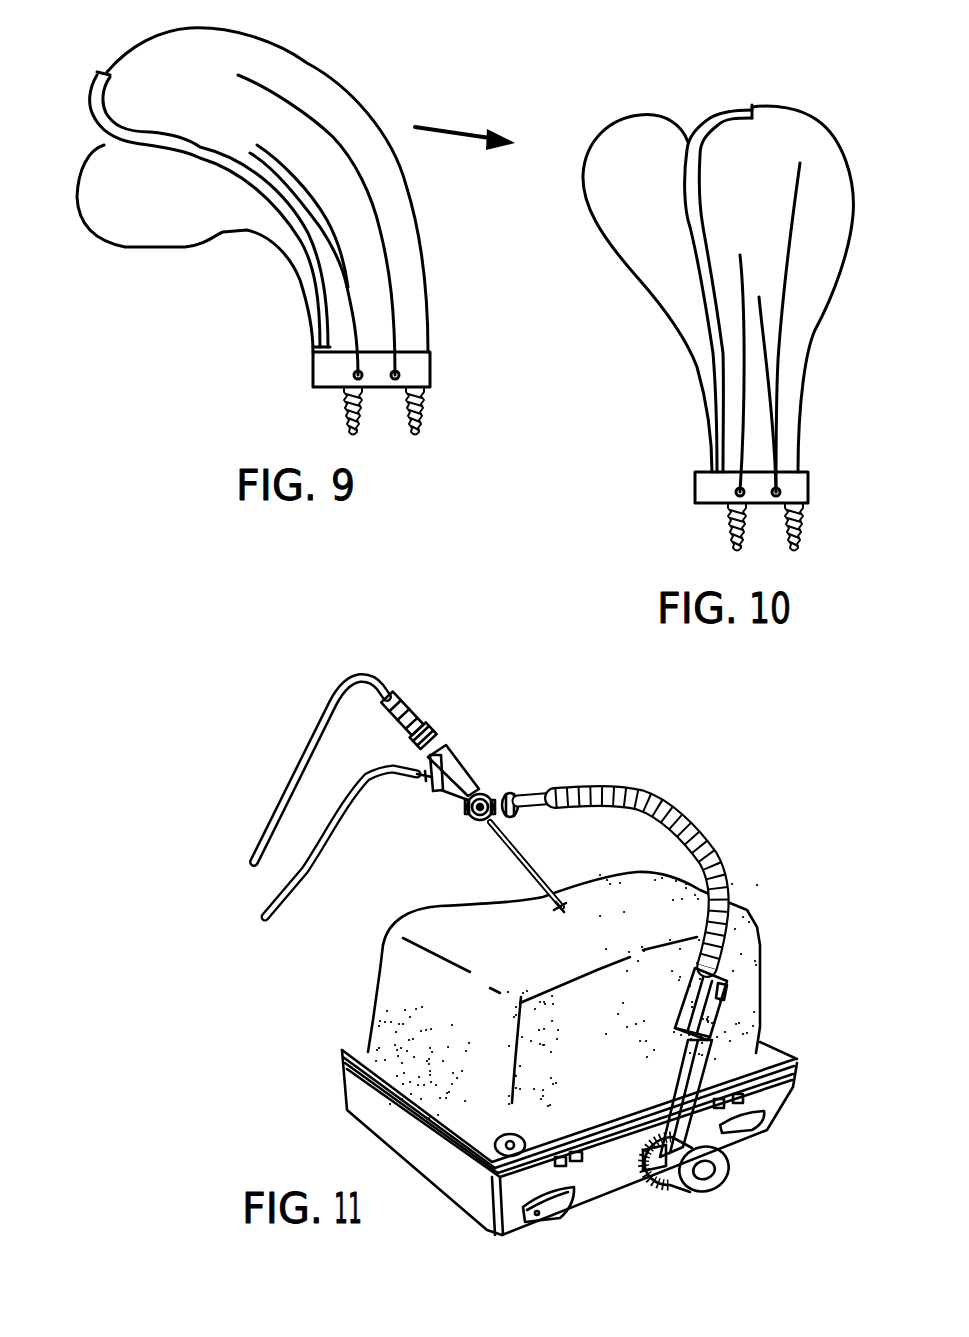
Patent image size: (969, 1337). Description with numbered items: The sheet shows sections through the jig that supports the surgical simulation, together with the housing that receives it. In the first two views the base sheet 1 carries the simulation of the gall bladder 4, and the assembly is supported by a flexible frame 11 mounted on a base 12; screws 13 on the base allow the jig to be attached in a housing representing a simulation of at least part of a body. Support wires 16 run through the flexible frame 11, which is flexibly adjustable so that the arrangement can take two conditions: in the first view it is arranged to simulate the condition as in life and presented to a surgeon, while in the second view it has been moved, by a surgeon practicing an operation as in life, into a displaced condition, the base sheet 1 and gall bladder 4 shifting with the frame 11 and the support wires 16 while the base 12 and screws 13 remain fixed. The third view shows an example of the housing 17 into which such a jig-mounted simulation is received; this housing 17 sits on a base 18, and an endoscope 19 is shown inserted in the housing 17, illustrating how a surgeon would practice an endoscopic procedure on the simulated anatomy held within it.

In FIG. 9, the base sheet 1 is at (93, 113).
In FIG. 10, the base sheet 1 is at (725, 110).
In FIG. 9, the simulation of the gall bladder 4 is at (120, 233).
In FIG. 10, the simulation of the gall bladder 4 is at (635, 140).
In FIG. 9, the flexible frame 11 is at (307, 78).
In FIG. 10, the flexible frame 11 is at (827, 167).
In FIG. 9, the base 12 is at (322, 365).
In FIG. 10, the base 12 is at (798, 482).
In FIG. 9, the screws 13 is at (343, 413).
In FIG. 10, the screws 13 is at (807, 527).
In FIG. 9, the support wires 16 is at (377, 222).
In FIG. 10, the support wires 16 is at (790, 242).
In FIG. 11, the housing 17 is at (743, 945).
In FIG. 11, the base 18 is at (775, 1100).
In FIG. 11, the endoscope 19 is at (517, 862).